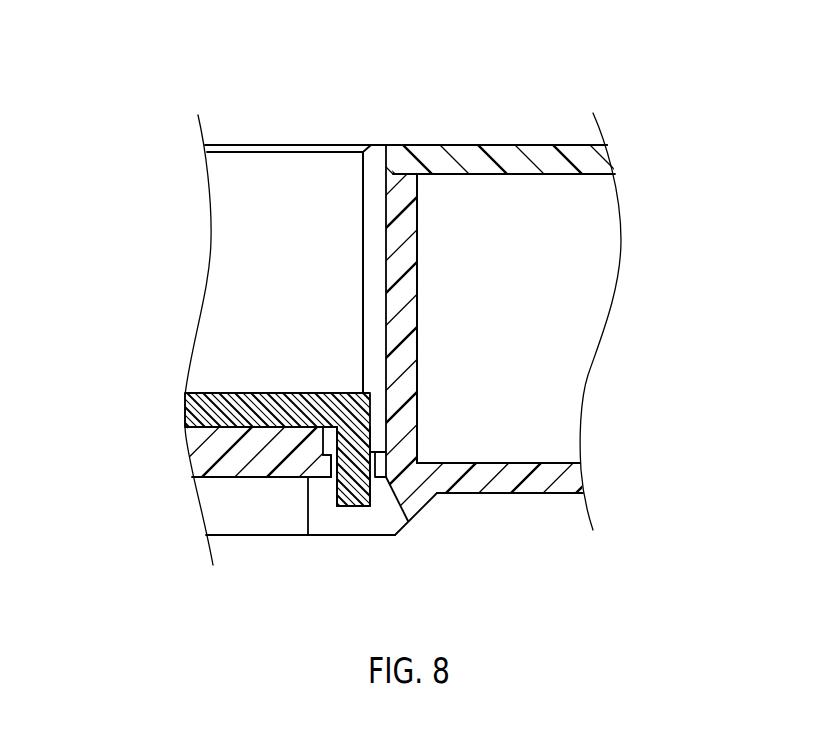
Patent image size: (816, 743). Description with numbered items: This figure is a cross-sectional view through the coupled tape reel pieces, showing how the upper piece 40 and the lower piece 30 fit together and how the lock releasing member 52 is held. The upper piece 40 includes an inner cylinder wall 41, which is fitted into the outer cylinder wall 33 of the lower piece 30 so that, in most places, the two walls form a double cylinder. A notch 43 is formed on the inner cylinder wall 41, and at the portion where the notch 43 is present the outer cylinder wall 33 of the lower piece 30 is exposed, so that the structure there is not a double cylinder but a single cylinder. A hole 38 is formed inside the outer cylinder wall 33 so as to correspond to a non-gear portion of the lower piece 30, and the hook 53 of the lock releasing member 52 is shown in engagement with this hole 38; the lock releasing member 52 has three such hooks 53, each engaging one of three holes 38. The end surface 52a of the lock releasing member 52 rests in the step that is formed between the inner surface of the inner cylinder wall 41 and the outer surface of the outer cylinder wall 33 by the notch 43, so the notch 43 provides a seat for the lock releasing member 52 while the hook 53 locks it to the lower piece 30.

The lower piece 30 is at (460, 522).
The outer cylinder wall 33 is at (386, 237).
The hole 38 is at (329, 466).
The upper piece 40 is at (437, 128).
The inner cylinder wall 41 is at (363, 257).
The notch 43 is at (377, 284).
The lock releasing member 52 is at (274, 394).
The end surface 52a is at (372, 423).
The hook 53 is at (328, 492).